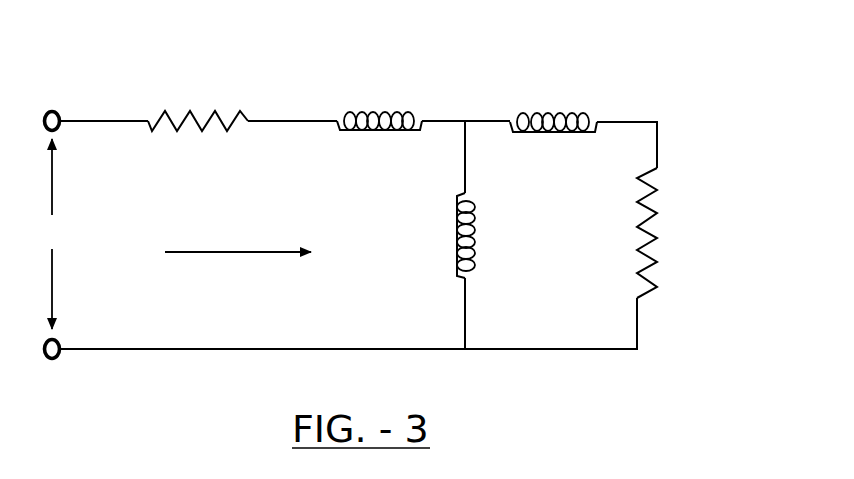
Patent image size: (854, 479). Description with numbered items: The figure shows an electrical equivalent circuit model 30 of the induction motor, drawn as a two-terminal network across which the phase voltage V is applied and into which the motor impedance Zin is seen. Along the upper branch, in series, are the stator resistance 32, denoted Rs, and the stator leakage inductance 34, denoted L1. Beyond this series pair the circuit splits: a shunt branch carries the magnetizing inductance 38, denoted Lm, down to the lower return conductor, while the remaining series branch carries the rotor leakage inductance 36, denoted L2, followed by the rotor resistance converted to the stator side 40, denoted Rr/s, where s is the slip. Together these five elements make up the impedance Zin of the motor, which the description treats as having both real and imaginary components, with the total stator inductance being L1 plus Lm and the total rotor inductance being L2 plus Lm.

The electrical equivalent circuit model 30 is at (453, 68).
The stator resistance 32 is at (207, 125).
The stator leakage inductance 34 is at (362, 112).
The rotor leakage inductance 36 is at (540, 133).
The magnetizing inductance 38 is at (456, 254).
The rotor resistance converted to stator side 40 is at (658, 190).